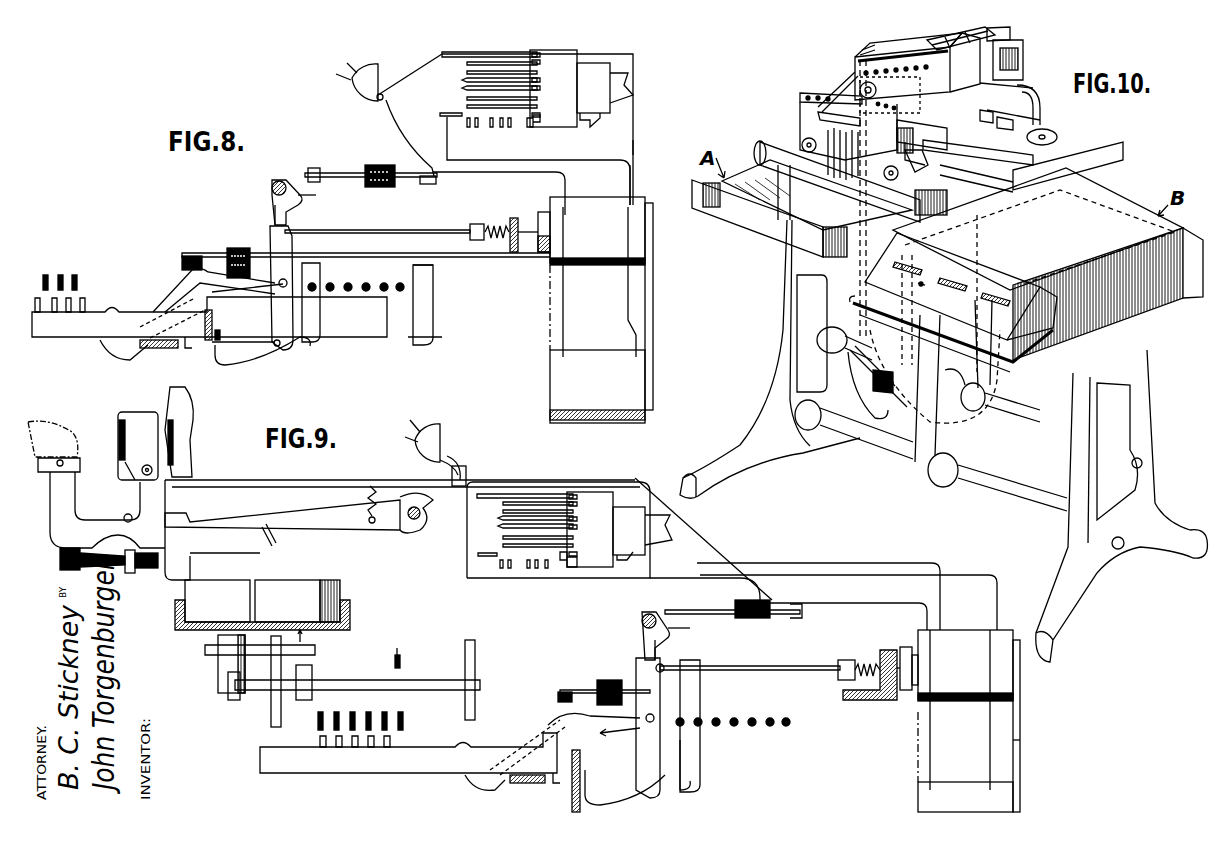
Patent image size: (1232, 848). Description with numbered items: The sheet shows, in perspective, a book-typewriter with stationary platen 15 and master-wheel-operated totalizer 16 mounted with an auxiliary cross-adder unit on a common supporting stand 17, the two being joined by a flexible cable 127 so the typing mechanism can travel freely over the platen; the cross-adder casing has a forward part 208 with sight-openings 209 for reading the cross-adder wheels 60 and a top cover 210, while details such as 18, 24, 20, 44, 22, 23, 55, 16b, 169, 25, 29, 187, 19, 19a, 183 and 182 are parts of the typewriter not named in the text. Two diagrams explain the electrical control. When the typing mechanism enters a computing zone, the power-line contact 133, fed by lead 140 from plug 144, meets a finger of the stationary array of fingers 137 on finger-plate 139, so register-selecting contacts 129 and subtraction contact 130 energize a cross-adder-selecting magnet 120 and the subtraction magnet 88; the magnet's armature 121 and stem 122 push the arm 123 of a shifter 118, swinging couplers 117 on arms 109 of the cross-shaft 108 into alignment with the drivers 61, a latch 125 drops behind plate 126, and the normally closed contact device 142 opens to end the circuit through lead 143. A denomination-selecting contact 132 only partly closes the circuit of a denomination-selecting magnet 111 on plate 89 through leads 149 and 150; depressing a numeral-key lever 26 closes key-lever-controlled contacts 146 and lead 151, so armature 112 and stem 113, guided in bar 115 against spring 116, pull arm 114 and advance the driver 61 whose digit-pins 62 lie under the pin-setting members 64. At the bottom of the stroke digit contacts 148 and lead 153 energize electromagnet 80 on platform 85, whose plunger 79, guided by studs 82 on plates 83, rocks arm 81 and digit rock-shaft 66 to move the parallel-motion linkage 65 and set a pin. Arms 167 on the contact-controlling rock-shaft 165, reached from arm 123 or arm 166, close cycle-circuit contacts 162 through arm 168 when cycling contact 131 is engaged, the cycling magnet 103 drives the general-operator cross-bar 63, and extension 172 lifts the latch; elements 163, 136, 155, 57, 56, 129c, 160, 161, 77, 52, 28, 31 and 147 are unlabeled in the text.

In FIG. 8, the plug 144 is at (380, 62).
In FIG. 9, the plug 144 is at (450, 433).
In FIG. 8, the lead 140 is at (418, 72).
In FIG. 9, the lead 140 is at (462, 460).
In FIG. 8, the bell clapper 163 is at (381, 101).
In FIG. 8, the control circuit box 136 is at (635, 50).
In FIG. 8, the conductor 155 is at (634, 148).
In FIG. 8, the power-line contact 133 is at (466, 52).
In FIG. 9, the power-line contact 133 is at (527, 494).
In FIG. 8, the subtraction contact 130 is at (482, 62).
In FIG. 9, the subtraction contact 130 is at (503, 511).
In FIG. 10, the subtraction contact 130 is at (890, 95).
In FIG. 8, the register-selecting contacts 129 is at (465, 88).
In FIG. 9, the register-selecting contacts 129 is at (502, 527).
In FIG. 8, the fingers 137 is at (545, 52).
In FIG. 9, the fingers 137 is at (585, 492).
In FIG. 10, the fingers 137 is at (984, 112).
In FIG. 8, the finger-plate 139 is at (582, 66).
In FIG. 9, the finger-plate 139 is at (616, 508).
In FIG. 10, the finger-plate 139 is at (1011, 116).
In FIG. 8, the connector 57 is at (621, 88).
In FIG. 9, the connector 57 is at (658, 530).
In FIG. 8, the connector 56 is at (594, 122).
In FIG. 9, the connector 56 is at (630, 558).
In FIG. 8, the cycling contact 131 is at (444, 115).
In FIG. 9, the cycling contact 131 is at (484, 557).
In FIG. 8, the contact pins 129c is at (497, 100).
In FIG. 9, the contact pins 129c is at (535, 538).
In FIG. 8, the denomination-selecting contact 132 is at (533, 125).
In FIG. 9, the denomination-selecting contact 132 is at (563, 568).
In FIG. 8, the conductor 160 is at (628, 176).
In FIG. 9, the conductor 160 is at (880, 604).
In FIG. 8, the conductor 161 is at (507, 174).
In FIG. 8, the register-selecting stem 122 is at (460, 229).
In FIG. 8, the spring 116 is at (497, 240).
In FIG. 9, the spring 116 is at (863, 662).
In FIG. 8, the bar 115 is at (515, 252).
In FIG. 9, the bar 115 is at (866, 700).
In FIG. 8, the armature 121 is at (541, 214).
In FIG. 8, the cross-adder-selecting magnet 120 is at (601, 303).
In FIG. 8, the subtraction magnet 88 is at (550, 316).
In FIG. 9, the subtraction magnet 88 is at (918, 752).
In FIG. 8, the cycling magnet 103 is at (597, 386).
In FIG. 9, the cycling magnet 103 is at (965, 797).
In FIG. 8, the arm 123 is at (293, 238).
In FIG. 9, the arm 123 is at (642, 667).
In FIG. 8, the arm 166 is at (273, 183).
In FIG. 8, the arms 167 is at (275, 210).
In FIG. 9, the arms 167 is at (659, 650).
In FIG. 8, the arm 168 is at (312, 197).
In FIG. 9, the arm 168 is at (677, 630).
In FIG. 8, the cycle-circuit contacts 162 is at (310, 170).
In FIG. 9, the cycle-circuit contacts 162 is at (685, 610).
In FIG. 8, the normally closed contact device 142 is at (184, 258).
In FIG. 9, the normally closed contact device 142 is at (560, 693).
In FIG. 8, the latch 125 is at (276, 285).
In FIG. 9, the latch 125 is at (620, 739).
In FIG. 8, the plate 126 is at (213, 320).
In FIG. 9, the plate 126 is at (553, 722).
In FIG. 8, the drivers 61 is at (209, 317).
In FIG. 9, the drivers 61 is at (262, 768).
In FIG. 8, the digit-pins 62 is at (82, 298).
In FIG. 9, the digit-pins 62 is at (330, 745).
In FIG. 8, the pin-setting members 64 is at (52, 276).
In FIG. 9, the pin-setting members 64 is at (385, 721).
In FIG. 8, the extension 172 is at (126, 358).
In FIG. 9, the extension 172 is at (479, 788).
In FIG. 8, the general-operator cross-bar 63 is at (162, 348).
In FIG. 9, the general-operator cross-bar 63 is at (521, 783).
In FIG. 8, the hook 77 is at (187, 348).
In FIG. 9, the hook 77 is at (555, 783).
In FIG. 8, the shifter 118 is at (226, 364).
In FIG. 9, the shifter 118 is at (587, 781).
In FIG. 8, the couplers 117 is at (309, 346).
In FIG. 9, the couplers 117 is at (685, 786).
In FIG. 8, the driver-advancing arm 109 is at (320, 322).
In FIG. 9, the driver-advancing arm 109 is at (684, 756).
In FIG. 8, the arm 114 is at (430, 279).
In FIG. 9, the arm 114 is at (690, 694).
In FIG. 8, the cross-shaft 108 is at (373, 284).
In FIG. 9, the cross-shaft 108 is at (780, 726).
In FIG. 9, the pawl lever 52 is at (190, 412).
In FIG. 9, the key-lever-controlled contacts 146 is at (120, 470).
In FIG. 9, the sector 28 is at (77, 455).
In FIG. 9, the lead 151 is at (166, 502).
In FIG. 9, the lead 153 is at (195, 562).
In FIG. 9, the numeral-key lever 26 is at (299, 513).
In FIG. 9, the slot 31 is at (274, 543).
In FIG. 9, the lead 143 is at (348, 492).
In FIG. 9, the pin 147 is at (124, 519).
In FIG. 9, the digit contacts 148 is at (62, 557).
In FIG. 9, the electromagnet 80 is at (340, 596).
In FIG. 9, the platform 85 is at (180, 630).
In FIG. 9, the studs 82 is at (211, 651).
In FIG. 9, the plunger 79 is at (287, 663).
In FIG. 9, the arm 81 is at (233, 699).
In FIG. 9, the plates 83 is at (272, 719).
In FIG. 9, the parallel-motion linkage 65 is at (399, 654).
In FIG. 9, the digit rock-shaft 66 is at (426, 680).
In FIG. 9, the contact-controlling rock-shaft 165 is at (643, 618).
In FIG. 9, the stem 113 is at (784, 672).
In FIG. 9, the armature 112 is at (904, 648).
In FIG. 9, the denomination-selecting magnet 111 is at (969, 721).
In FIG. 9, the plate 89 is at (1020, 746).
In FIG. 9, the lead 150 is at (823, 566).
In FIG. 9, the lead 149 is at (965, 576).
In FIG. 10, the supporting stand 17 is at (1150, 404).
In FIG. 10, the cable 127 is at (889, 413).
In FIG. 10, the rail end 18 is at (710, 208).
In FIG. 10, the stationary platen 15 is at (765, 204).
In FIG. 10, the rail 24 is at (866, 190).
In FIG. 10, the beam 20 is at (1040, 170).
In FIG. 10, the bracket 44 is at (965, 160).
In FIG. 10, the machine head 22 is at (853, 60).
In FIG. 10, the keys 23 is at (1042, 198).
In FIG. 10, the cover 55 is at (922, 62).
In FIG. 10, the bracket 16b is at (1008, 25).
In FIG. 10, the totalizer 16 is at (1024, 55).
In FIG. 10, the bar 169 is at (805, 92).
In FIG. 10, the bar 25 is at (842, 98).
In FIG. 10, the carriage strips 29 is at (845, 165).
In FIG. 10, the bracket 187 is at (935, 120).
In FIG. 10, the arm 19 is at (1042, 100).
In FIG. 10, the disc 19a is at (1058, 135).
In FIG. 10, the cam 183 is at (927, 158).
In FIG. 10, the pulley 182 is at (900, 174).
In FIG. 10, the sight-openings 209 is at (935, 262).
In FIG. 10, the cross-adder wheels 60 is at (940, 291).
In FIG. 10, the forward part of casing 208 is at (1026, 300).
In FIG. 10, the top cover 210 is at (1038, 281).